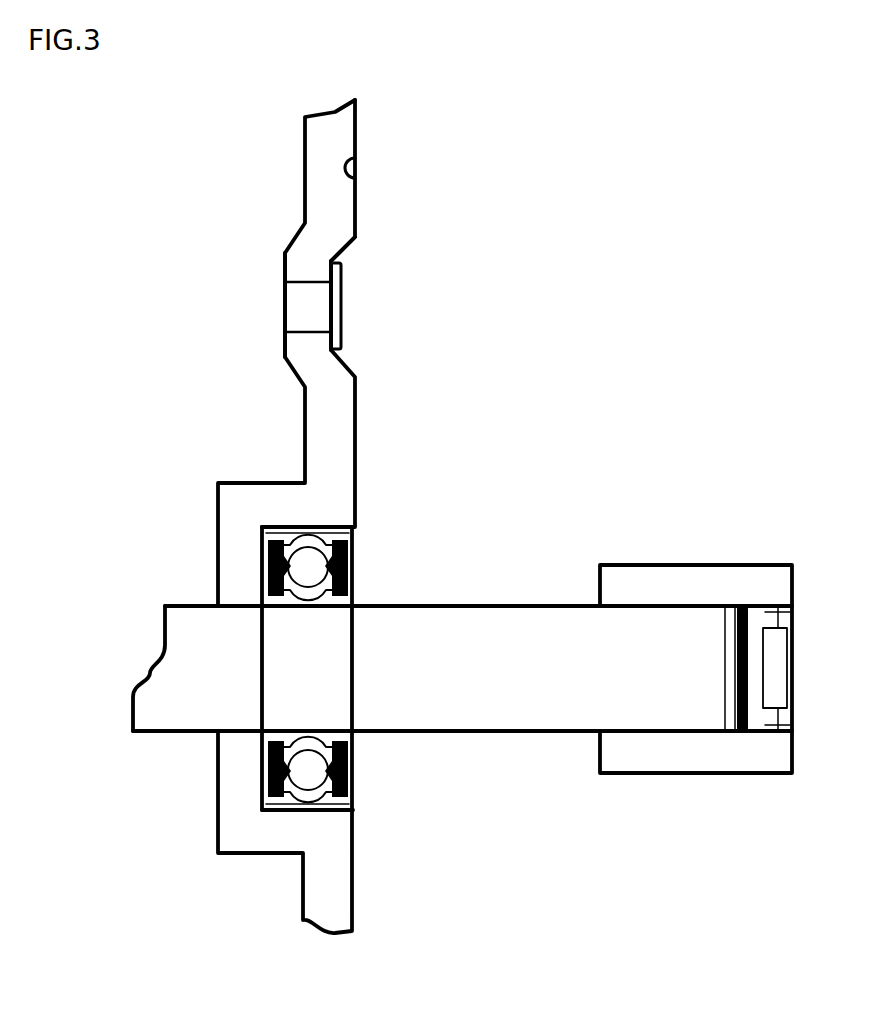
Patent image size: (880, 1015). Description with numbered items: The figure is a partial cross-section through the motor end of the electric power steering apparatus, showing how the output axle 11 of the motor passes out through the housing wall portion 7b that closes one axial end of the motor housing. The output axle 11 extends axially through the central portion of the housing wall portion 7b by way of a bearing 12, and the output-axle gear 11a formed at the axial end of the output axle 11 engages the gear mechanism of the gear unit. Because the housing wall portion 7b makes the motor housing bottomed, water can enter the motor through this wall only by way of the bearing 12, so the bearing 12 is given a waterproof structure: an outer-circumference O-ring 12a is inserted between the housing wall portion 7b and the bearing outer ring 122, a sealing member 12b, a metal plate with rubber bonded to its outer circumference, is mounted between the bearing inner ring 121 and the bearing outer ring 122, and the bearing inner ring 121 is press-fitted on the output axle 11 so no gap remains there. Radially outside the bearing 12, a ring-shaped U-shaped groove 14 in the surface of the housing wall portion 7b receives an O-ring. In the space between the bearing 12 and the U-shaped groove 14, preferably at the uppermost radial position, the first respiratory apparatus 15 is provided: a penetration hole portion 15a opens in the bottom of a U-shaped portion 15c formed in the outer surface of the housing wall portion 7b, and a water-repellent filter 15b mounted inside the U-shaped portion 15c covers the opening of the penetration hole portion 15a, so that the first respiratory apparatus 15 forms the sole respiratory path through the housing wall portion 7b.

The housing wall portion 7b is at (330, 155).
The U-shaped groove 14 is at (357, 177).
The first respiratory apparatus 15 is at (395, 336).
The penetration hole portion 15a is at (303, 287).
The filter 15b is at (341, 312).
The U-shaped portion 15c is at (355, 243).
The output axle 11 is at (483, 620).
The output-axle gear 11a is at (680, 585).
The bearing 12 is at (377, 787).
The outer-circumference O-ring 12a is at (312, 525).
The sealing member 12b is at (352, 563).
The bearing inner ring 121 is at (328, 742).
The bearing outer ring 122 is at (313, 800).